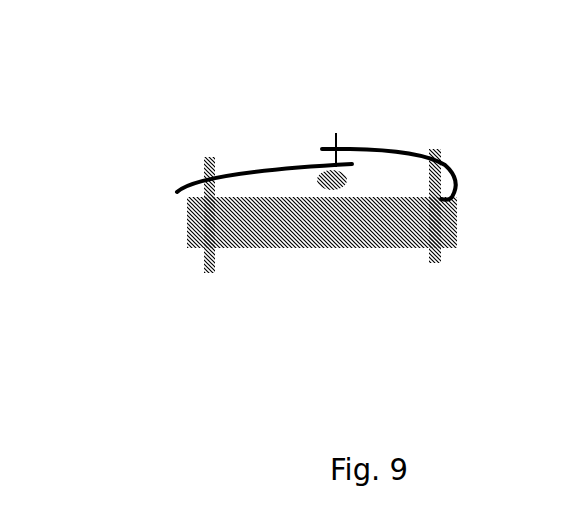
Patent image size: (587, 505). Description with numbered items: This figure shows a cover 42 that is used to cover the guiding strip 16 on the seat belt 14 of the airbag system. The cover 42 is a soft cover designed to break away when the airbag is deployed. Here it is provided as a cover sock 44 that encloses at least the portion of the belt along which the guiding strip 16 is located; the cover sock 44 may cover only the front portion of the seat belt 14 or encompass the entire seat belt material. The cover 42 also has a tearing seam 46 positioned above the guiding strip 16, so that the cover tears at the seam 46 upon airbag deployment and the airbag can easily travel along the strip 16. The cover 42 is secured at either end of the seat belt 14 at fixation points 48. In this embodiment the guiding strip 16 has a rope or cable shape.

The cover 42 is at (150, 232).
The seat belt 14 is at (372, 248).
The fixation points 48 is at (203, 156).
The guiding strip 16 is at (327, 192).
The cover sock 44 is at (276, 162).
The tearing seam 46 is at (336, 135).